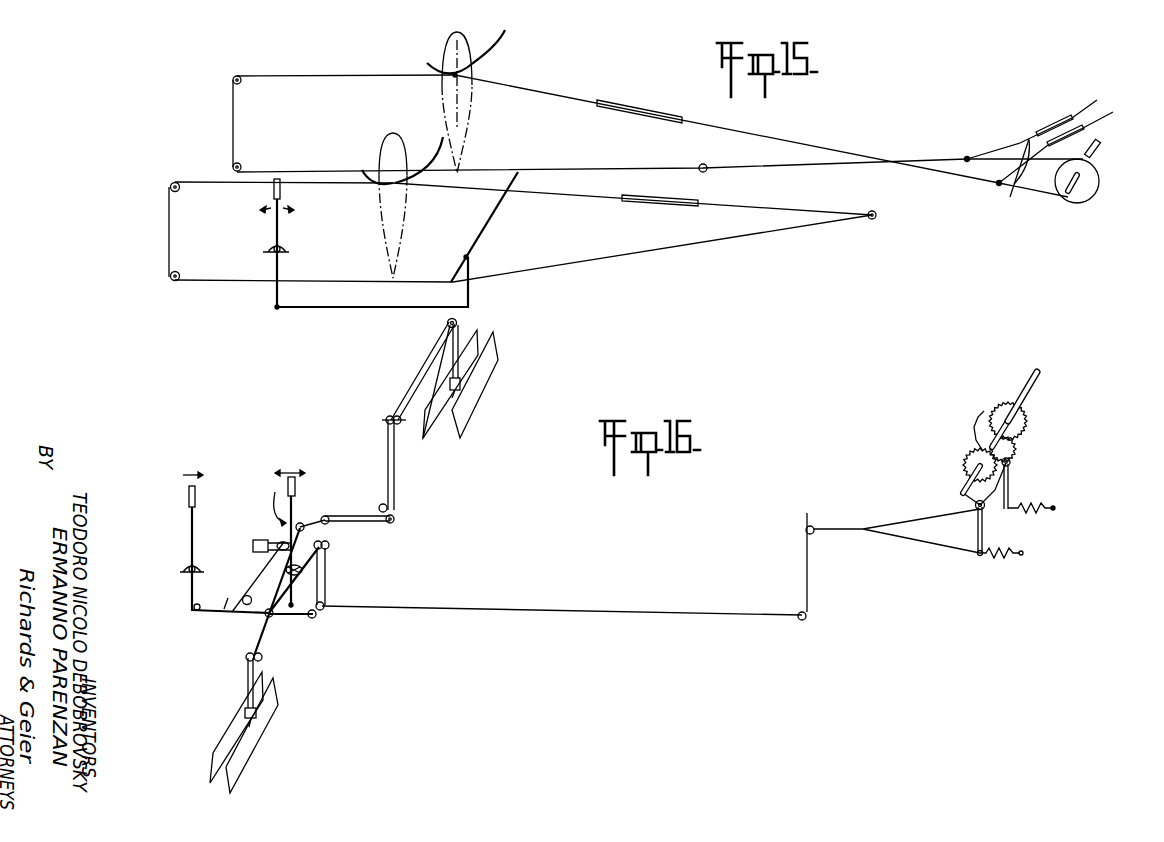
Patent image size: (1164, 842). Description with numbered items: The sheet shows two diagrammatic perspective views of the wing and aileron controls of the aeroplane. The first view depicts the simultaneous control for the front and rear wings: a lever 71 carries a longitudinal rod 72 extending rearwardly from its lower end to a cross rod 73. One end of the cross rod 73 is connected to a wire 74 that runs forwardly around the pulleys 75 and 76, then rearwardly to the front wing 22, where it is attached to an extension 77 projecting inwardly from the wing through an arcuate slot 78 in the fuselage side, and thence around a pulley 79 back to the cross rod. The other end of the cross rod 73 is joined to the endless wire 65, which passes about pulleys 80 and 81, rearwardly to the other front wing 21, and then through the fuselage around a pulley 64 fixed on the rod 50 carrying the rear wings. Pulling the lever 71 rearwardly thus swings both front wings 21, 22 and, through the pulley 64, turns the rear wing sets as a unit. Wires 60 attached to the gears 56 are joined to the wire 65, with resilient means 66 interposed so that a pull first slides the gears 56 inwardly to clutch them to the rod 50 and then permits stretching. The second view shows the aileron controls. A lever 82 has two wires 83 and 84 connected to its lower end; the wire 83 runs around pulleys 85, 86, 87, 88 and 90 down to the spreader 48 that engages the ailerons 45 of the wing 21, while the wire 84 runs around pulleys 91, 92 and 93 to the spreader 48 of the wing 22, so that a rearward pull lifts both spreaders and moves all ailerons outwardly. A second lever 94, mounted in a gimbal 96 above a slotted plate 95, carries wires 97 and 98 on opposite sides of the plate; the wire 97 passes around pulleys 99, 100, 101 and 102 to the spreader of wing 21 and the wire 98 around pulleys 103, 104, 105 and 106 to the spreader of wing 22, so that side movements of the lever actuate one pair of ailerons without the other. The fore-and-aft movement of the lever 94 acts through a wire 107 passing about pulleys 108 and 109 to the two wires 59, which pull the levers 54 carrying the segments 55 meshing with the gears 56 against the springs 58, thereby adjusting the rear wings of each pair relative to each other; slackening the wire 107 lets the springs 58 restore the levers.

In FIG. 15, the front wing 21 is at (440, 100).
In FIG. 15, the front wing 22 is at (400, 226).
In FIG. 16, the ailerons 45 is at (463, 405).
In FIG. 16, the spreader 48 is at (461, 390).
In FIG. 15, the rod 50 is at (1102, 150).
In FIG. 16, the rod 50 is at (1025, 383).
In FIG. 16, the lever 54 is at (985, 532).
In FIG. 16, the segment 55 is at (960, 471).
In FIG. 16, the gear 56 is at (977, 421).
In FIG. 16, the spring 58 is at (1040, 515).
In FIG. 16, the wire 59 is at (917, 514).
In FIG. 15, the wires 60 is at (1008, 141).
In FIG. 15, the pulley 64 is at (1091, 197).
In FIG. 15, the wire 65 is at (584, 108).
In FIG. 15, the resilient means 66 is at (1062, 128).
In FIG. 15, the lever 71 is at (282, 234).
In FIG. 15, the longitudinal rod 72 is at (355, 316).
In FIG. 15, the cross rod 73 is at (494, 226).
In FIG. 15, the wire 74 is at (549, 277).
In FIG. 15, the pulley 75 is at (178, 272).
In FIG. 15, the pulley 76 is at (178, 191).
In FIG. 15, the extension 77 is at (393, 182).
In FIG. 15, the arcuate slot 78 is at (431, 142).
In FIG. 15, the pulley 79 is at (876, 217).
In FIG. 15, the pulley 80 is at (241, 164).
In FIG. 15, the pulley 81 is at (241, 84).
In FIG. 16, the lever 82 is at (190, 556).
In FIG. 16, the wire 83 is at (220, 591).
In FIG. 16, the wire 84 is at (222, 616).
In FIG. 16, the pulley 85 is at (247, 595).
In FIG. 16, the pulley 86 is at (299, 497).
In FIG. 16, the pulley 87 is at (395, 521).
In FIG. 16, the pulley 88 is at (404, 428).
In FIG. 16, the pulley 90 is at (460, 326).
In FIG. 16, the pulley 91 is at (327, 609).
In FIG. 16, the pulley 92 is at (330, 547).
In FIG. 16, the pulley 93 is at (264, 657).
In FIG. 16, the lever 94 is at (266, 501).
In FIG. 16, the slotted plate 95 is at (304, 571).
In FIG. 16, the gimbal 96 is at (282, 540).
In FIG. 16, the wire 97 is at (308, 517).
In FIG. 16, the wire 98 is at (263, 619).
In FIG. 16, the pulley 99 is at (330, 519).
In FIG. 16, the pulley 100 is at (390, 506).
In FIG. 16, the pulley 101 is at (386, 422).
In FIG. 16, the pulley 102 is at (445, 326).
In FIG. 16, the pulley 103 is at (278, 620).
In FIG. 16, the pulley 104 is at (320, 618).
In FIG. 16, the pulley 105 is at (334, 534).
In FIG. 16, the pulley 106 is at (244, 660).
In FIG. 16, the wire 107 is at (592, 606).
In FIG. 16, the pulley 108 is at (800, 612).
In FIG. 16, the pulley 109 is at (809, 526).